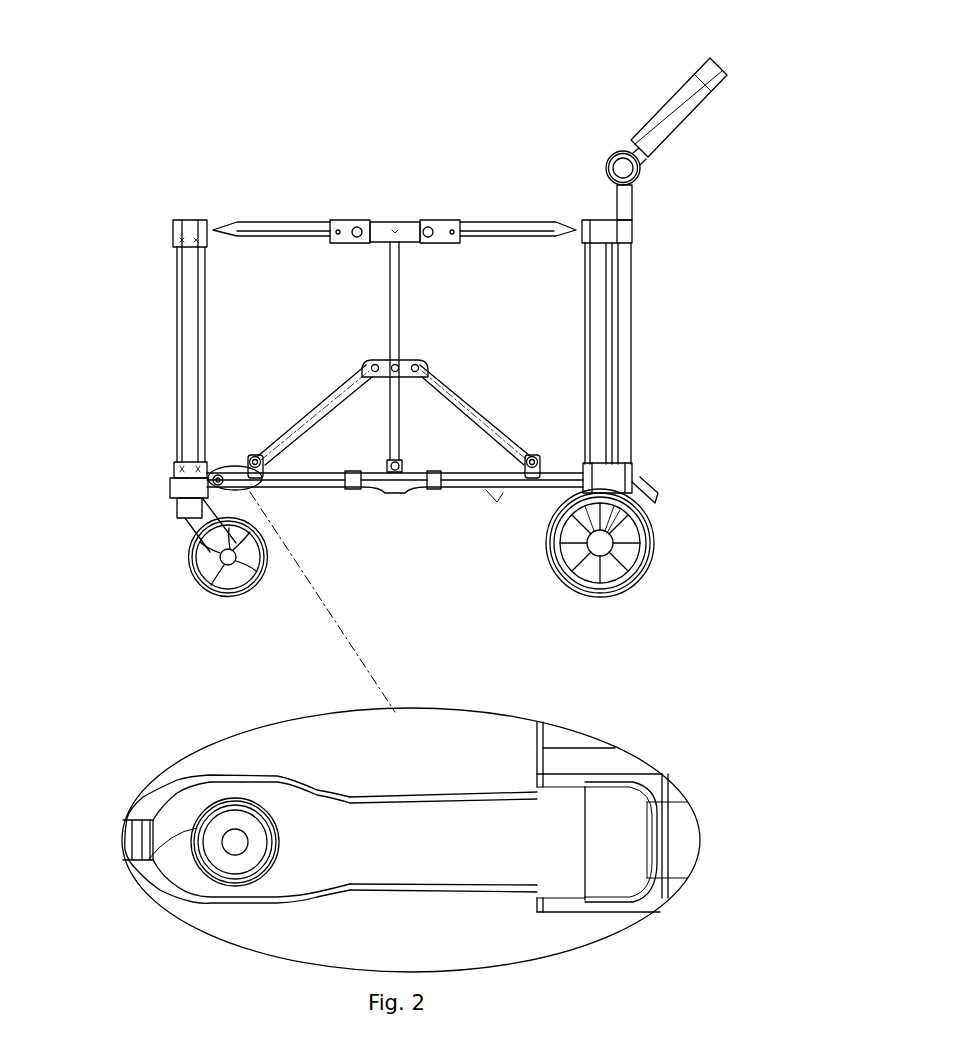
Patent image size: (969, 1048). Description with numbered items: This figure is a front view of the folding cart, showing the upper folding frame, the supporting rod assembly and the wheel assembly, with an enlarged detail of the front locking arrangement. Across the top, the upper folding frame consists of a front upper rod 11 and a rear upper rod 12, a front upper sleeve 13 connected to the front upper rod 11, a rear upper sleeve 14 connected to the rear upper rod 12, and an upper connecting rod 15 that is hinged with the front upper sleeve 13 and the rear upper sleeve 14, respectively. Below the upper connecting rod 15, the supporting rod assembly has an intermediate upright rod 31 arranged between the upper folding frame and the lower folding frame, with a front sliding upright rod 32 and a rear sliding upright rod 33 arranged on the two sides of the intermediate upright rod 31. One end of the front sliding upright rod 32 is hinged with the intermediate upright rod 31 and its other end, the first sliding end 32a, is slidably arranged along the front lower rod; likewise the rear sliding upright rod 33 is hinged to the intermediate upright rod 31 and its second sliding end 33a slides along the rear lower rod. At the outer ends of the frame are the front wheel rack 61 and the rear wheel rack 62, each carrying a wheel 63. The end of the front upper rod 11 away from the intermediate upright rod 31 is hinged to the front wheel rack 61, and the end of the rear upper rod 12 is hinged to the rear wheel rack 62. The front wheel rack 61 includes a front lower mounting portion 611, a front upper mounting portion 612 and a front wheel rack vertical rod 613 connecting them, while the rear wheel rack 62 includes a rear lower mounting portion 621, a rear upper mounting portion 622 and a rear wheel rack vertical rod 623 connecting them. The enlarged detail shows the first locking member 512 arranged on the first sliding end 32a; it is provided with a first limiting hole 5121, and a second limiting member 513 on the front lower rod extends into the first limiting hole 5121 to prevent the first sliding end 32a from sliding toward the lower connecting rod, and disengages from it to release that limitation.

The front upper rod 11 is at (280, 220).
The rear upper rod 12 is at (515, 222).
The front upper sleeve 13 is at (340, 220).
The rear upper sleeve 14 is at (438, 220).
The upper connecting rod 15 is at (398, 222).
The intermediate upright rod 31 is at (390, 312).
The front sliding upright rod 32 is at (327, 407).
The rear sliding upright rod 33 is at (480, 413).
The first sliding end 32a is at (300, 481).
The second sliding end 33a is at (492, 487).
The front wheel rack 61 is at (64, 58).
The front lower mounting portion 611 is at (177, 466).
The front upper mounting portion 612 is at (173, 230).
The front wheel rack vertical rod 613 is at (178, 354).
The rear wheel rack 62 is at (528, 28).
The rear lower mounting portion 621 is at (628, 460).
The rear upper mounting portion 622 is at (633, 244).
The rear wheel rack vertical rod 623 is at (603, 342).
The wheels 63 is at (188, 559).
The first locking member 512 is at (628, 850).
The second limiting member 513 is at (125, 850).
The first limiting hole 5121 is at (204, 811).